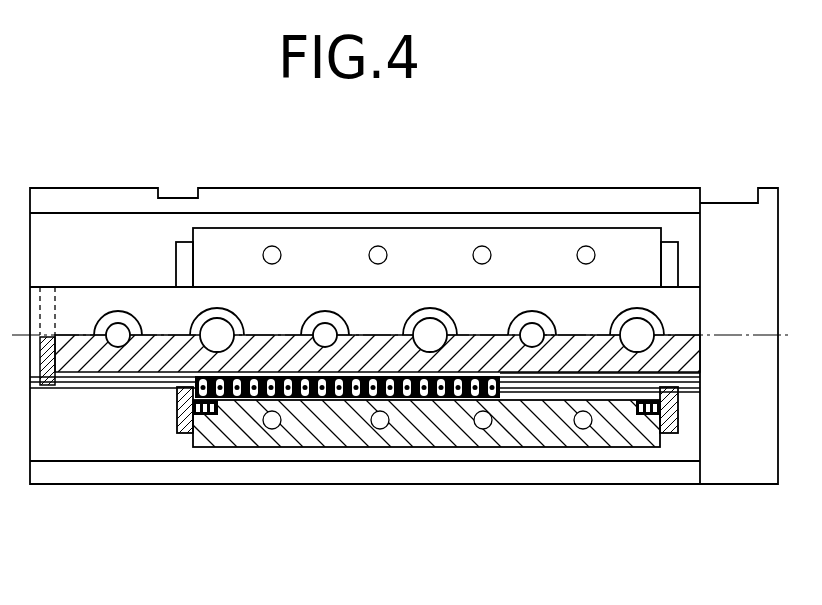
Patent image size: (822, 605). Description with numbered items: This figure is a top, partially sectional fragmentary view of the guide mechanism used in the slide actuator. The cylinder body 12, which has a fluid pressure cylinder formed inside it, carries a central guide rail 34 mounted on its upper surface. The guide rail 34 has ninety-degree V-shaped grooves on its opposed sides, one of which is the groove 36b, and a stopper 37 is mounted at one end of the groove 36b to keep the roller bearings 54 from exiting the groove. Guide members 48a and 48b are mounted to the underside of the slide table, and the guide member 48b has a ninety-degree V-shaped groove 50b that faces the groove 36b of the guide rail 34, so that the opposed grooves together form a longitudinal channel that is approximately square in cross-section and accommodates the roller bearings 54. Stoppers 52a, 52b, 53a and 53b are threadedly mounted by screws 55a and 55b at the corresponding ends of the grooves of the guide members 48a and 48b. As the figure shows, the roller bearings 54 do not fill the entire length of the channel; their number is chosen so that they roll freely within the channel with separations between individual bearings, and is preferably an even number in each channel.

The cylinder body 12 is at (90, 240).
The central guide rail 34 is at (290, 303).
The V-shaped groove 36b is at (122, 389).
The stopper 37 is at (45, 387).
The guide member 48a is at (425, 250).
The guide member 48b is at (430, 447).
The V-shaped groove 50b is at (605, 393).
The stopper 52a is at (183, 258).
The stopper 52b is at (186, 433).
The stopper 53a is at (672, 252).
The stopper 53b is at (675, 433).
The roller bearings 54 is at (318, 399).
The screw 55a is at (662, 412).
The screw 55b is at (192, 410).